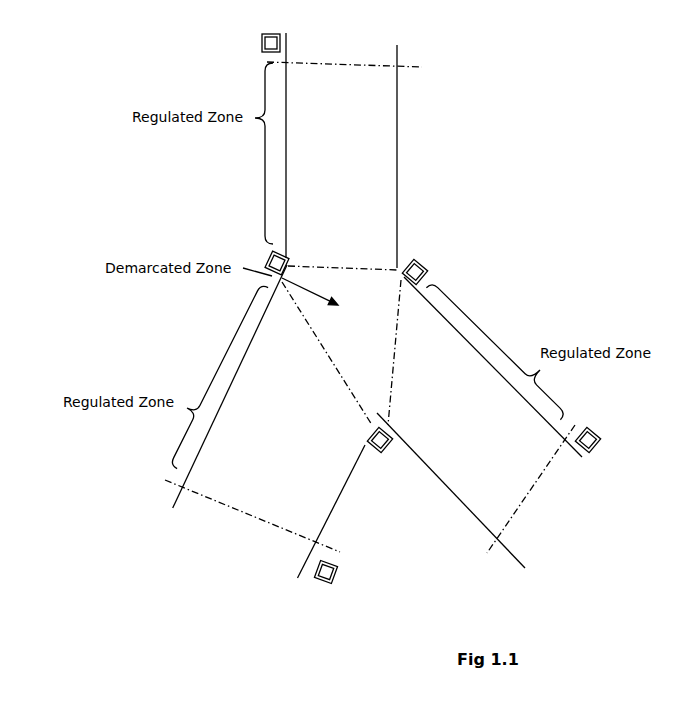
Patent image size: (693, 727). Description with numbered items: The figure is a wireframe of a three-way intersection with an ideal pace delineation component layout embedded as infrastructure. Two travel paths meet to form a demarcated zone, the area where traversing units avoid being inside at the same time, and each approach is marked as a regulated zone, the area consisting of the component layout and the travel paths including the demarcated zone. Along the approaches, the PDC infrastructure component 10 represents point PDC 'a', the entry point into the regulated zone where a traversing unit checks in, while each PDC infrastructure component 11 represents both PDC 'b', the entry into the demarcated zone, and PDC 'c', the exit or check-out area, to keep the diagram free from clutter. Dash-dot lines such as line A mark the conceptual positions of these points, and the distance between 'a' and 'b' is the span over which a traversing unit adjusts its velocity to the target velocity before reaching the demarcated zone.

The PDC infrastructure component 10 is at (336, 576).
The PDC infrastructure component 11 is at (266, 254).
The boundary line A is at (421, 291).